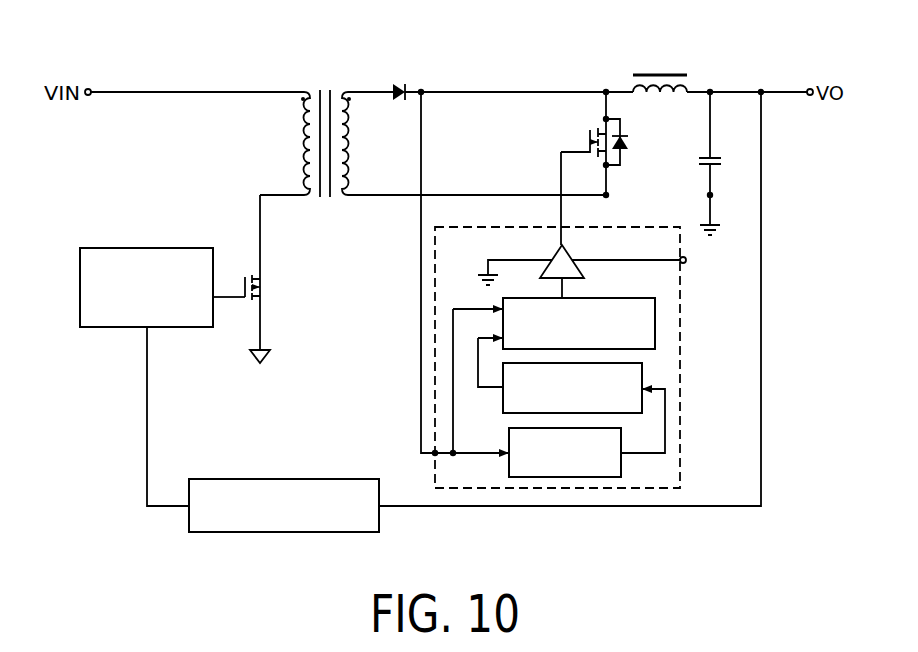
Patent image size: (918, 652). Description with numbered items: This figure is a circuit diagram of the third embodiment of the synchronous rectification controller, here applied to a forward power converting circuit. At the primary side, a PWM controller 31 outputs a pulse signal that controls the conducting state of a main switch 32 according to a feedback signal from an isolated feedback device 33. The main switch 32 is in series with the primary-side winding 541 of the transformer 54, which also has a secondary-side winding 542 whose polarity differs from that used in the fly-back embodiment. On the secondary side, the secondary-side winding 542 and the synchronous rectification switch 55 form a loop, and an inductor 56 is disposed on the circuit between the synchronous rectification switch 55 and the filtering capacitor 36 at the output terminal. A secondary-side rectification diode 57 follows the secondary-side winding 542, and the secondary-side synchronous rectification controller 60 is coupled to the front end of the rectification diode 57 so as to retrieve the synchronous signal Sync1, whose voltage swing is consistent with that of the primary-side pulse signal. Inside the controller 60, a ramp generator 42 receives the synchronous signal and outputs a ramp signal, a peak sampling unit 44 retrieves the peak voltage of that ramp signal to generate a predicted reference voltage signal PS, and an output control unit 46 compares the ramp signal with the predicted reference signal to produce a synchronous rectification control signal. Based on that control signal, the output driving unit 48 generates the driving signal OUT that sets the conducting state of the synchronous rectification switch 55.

The PWM controller 31 is at (147, 248).
The main switch 32 is at (245, 253).
The isolated feedback device 33 is at (290, 479).
The filtering capacitor 36 is at (733, 156).
The ramp generator 42 is at (582, 477).
The peak sampling unit 44 is at (642, 372).
The output control unit 46 is at (655, 325).
The output driving unit 48 is at (542, 246).
The transformer 54 is at (341, 106).
The primary-side winding 541 is at (293, 150).
The secondary-side winding 542 is at (362, 131).
The synchronous rectification switch 55 is at (574, 121).
The inductor 56 is at (666, 60).
The secondary-side rectification diode 57 is at (403, 65).
The secondary-side synchronous rectification controller 60 is at (592, 380).